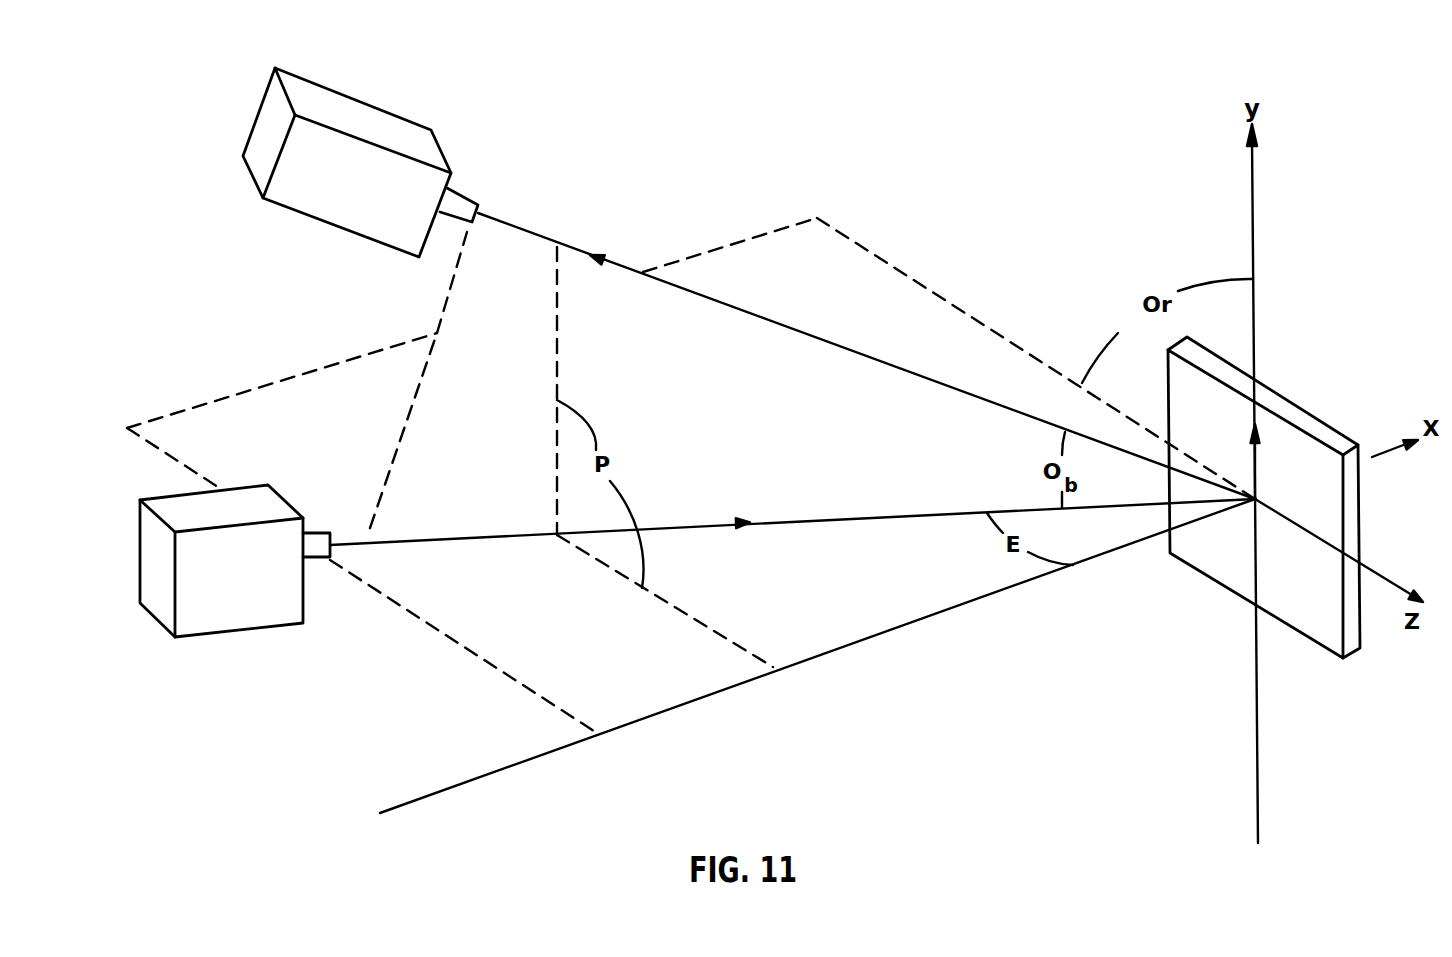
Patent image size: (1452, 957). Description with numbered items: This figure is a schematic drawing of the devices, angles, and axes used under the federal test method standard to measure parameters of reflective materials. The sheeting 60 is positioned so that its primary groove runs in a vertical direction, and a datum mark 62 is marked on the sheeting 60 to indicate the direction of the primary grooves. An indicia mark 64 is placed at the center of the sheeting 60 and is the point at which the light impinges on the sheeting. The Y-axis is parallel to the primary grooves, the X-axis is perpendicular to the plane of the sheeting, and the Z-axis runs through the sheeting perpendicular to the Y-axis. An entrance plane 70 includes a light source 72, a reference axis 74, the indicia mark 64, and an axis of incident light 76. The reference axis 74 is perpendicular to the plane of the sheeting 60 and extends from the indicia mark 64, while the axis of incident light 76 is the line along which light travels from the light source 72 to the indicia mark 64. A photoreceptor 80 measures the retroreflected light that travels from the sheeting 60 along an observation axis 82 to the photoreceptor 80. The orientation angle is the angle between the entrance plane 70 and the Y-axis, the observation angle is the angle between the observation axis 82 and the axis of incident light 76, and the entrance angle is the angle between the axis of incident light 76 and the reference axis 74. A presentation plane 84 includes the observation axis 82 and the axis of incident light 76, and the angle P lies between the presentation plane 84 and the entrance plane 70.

The sheeting 60 is at (1320, 613).
The datum mark 62 is at (1262, 440).
The indicia mark 64 is at (1252, 505).
The entrance plane 70 is at (573, 653).
The light source 72 is at (250, 597).
The reference axis 74 is at (683, 705).
The axis of incident light 76 is at (812, 519).
The photoreceptor 80 is at (327, 193).
The observation axis 82 is at (733, 305).
The presentation plane 84 is at (473, 377).